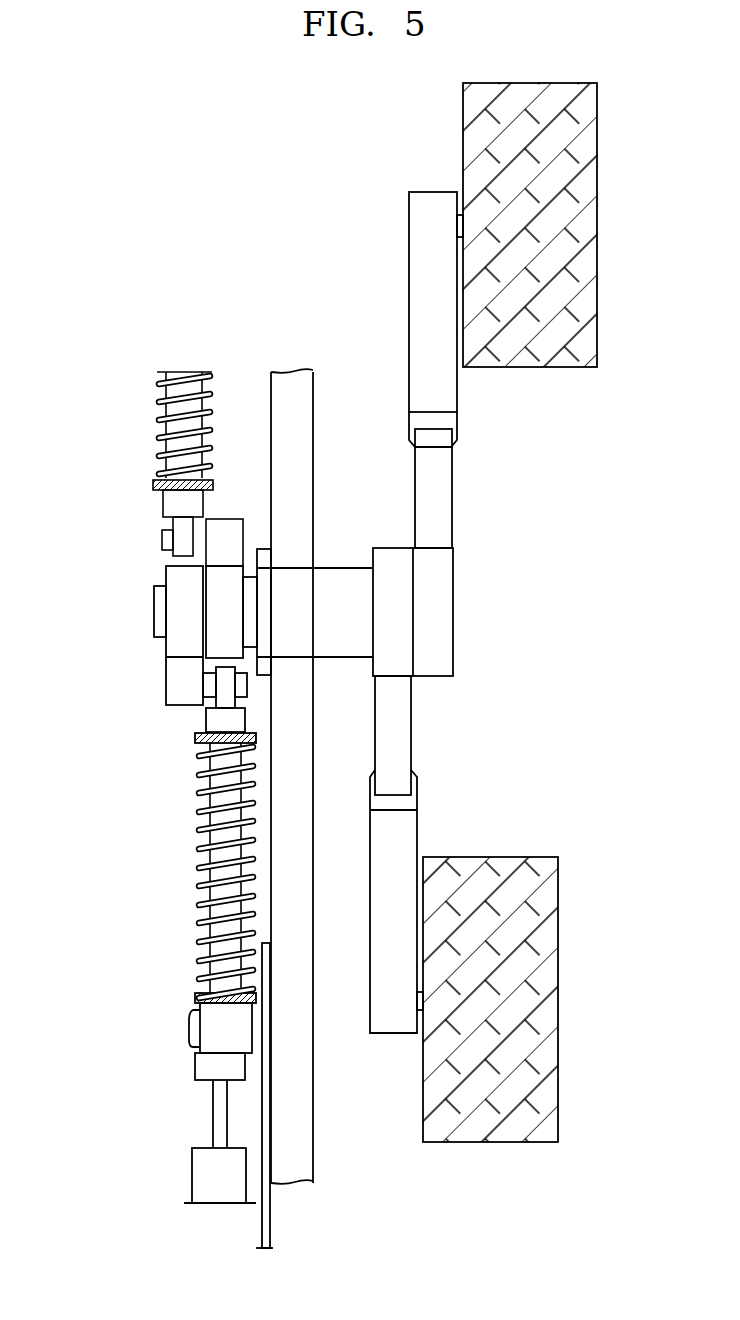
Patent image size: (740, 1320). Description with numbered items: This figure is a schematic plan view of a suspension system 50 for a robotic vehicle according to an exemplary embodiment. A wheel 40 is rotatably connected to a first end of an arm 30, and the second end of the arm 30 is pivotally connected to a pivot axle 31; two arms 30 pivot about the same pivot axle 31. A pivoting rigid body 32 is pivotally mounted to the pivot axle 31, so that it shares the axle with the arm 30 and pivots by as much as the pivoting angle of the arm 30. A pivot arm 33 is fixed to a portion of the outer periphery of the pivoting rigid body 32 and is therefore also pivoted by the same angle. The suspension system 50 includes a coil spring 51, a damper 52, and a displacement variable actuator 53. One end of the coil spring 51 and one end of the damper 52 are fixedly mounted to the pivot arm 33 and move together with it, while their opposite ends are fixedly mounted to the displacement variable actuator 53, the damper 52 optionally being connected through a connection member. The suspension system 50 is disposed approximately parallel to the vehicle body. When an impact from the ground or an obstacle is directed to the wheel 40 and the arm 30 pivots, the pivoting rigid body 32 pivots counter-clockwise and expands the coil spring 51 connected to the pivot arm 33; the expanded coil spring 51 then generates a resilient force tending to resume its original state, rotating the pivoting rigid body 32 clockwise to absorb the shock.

The arm 30 is at (402, 732).
The pivot axle 31 is at (160, 611).
The pivoting rigid body 32 is at (177, 645).
The pivot arm 33 is at (208, 683).
The wheel 40 is at (525, 1001).
The suspension system 50 is at (146, 894).
The coil spring 51 is at (207, 877).
The damper 52 is at (225, 908).
The displacement variable actuator 53 is at (207, 1062).